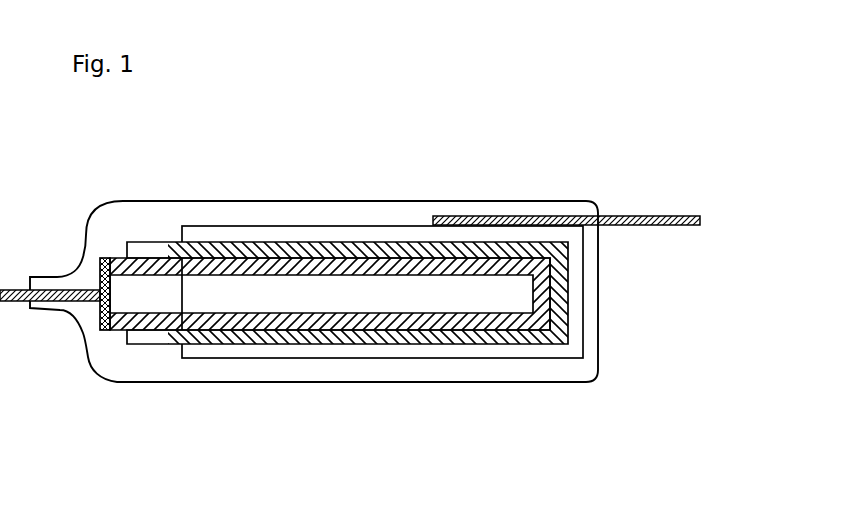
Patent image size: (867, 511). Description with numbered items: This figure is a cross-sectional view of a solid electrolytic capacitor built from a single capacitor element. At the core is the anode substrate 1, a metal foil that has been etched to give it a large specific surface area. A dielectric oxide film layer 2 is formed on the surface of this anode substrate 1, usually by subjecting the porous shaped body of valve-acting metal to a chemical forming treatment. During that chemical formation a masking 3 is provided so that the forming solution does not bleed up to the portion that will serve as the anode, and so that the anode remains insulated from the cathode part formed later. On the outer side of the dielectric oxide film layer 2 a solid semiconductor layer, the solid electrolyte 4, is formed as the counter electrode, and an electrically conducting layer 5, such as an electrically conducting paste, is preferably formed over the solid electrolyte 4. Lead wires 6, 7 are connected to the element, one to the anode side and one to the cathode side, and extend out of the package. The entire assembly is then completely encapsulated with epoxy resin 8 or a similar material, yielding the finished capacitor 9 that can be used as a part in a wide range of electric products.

The anode substrate 1 is at (140, 300).
The dielectric oxide film layer 2 is at (270, 242).
The masking 3 is at (152, 242).
The solid electrolyte 4 is at (340, 242).
The electrically conducting layer 5 is at (80, 337).
The lead wire 6 is at (17, 287).
The lead wire 7 is at (640, 216).
The epoxy resin 8 is at (500, 367).
The capacitor 9 is at (543, 172).